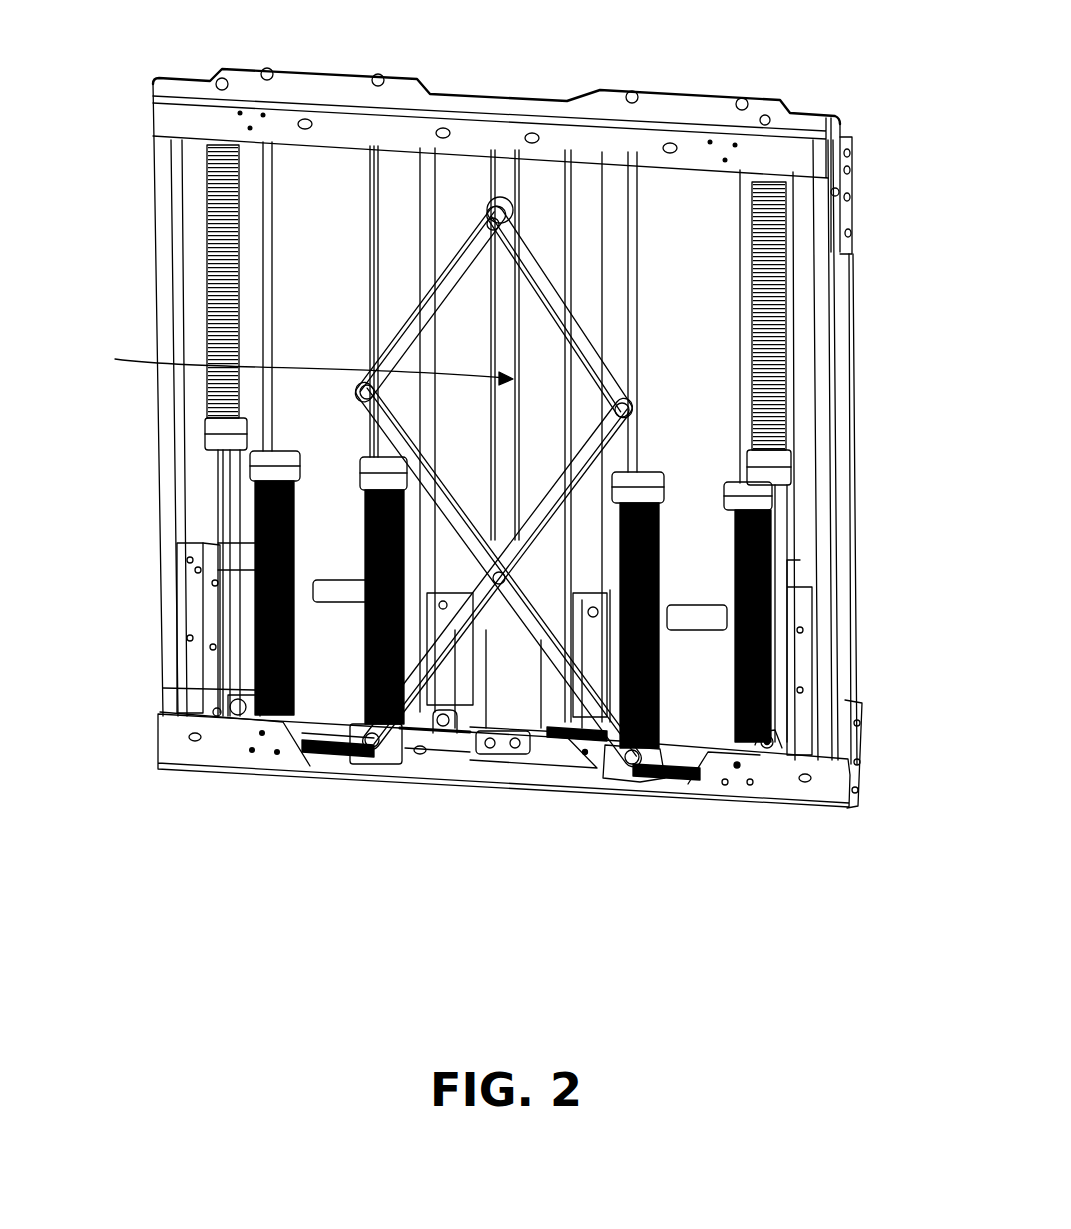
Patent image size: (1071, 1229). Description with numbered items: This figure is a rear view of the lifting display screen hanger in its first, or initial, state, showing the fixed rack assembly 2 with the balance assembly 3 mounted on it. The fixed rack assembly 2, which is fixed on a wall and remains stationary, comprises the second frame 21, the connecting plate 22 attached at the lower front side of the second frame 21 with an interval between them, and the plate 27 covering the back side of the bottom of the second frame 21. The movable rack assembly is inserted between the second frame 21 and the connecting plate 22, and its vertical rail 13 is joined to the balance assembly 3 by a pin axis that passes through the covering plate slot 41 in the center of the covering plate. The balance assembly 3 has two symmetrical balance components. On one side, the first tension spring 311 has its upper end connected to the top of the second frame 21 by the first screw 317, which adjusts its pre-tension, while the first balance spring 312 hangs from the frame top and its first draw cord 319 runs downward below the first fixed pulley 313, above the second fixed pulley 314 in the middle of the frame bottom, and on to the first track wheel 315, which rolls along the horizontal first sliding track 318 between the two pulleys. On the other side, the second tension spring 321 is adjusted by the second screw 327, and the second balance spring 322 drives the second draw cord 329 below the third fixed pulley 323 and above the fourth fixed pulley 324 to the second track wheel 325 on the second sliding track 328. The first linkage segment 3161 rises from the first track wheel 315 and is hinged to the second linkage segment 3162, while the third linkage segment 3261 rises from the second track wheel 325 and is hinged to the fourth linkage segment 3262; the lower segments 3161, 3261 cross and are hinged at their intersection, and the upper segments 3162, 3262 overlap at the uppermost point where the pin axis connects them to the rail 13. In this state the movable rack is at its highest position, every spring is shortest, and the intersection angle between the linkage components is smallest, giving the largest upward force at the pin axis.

The fixed rack assembly 2 is at (500, 140).
The balance assembly 3 is at (586, 705).
The rail 13 is at (512, 705).
The second frame 21 is at (168, 509).
The connecting plate 22 is at (777, 711).
The plate 27 is at (452, 757).
The covering plate slot 41 is at (298, 363).
The first tension spring 311 is at (640, 775).
The first balance spring 312 is at (752, 316).
The first fixed pulley 313 is at (795, 787).
The second fixed pulley 314 is at (520, 762).
The first track wheel 315 is at (665, 777).
The first screw 317 is at (750, 423).
The first sliding track 318 is at (660, 770).
The first draw cord 319 is at (787, 655).
The second tension spring 321 is at (240, 735).
The second balance spring 322 is at (213, 316).
The third fixed pulley 323 is at (200, 688).
The fourth fixed pulley 324 is at (482, 762).
The second track wheel 325 is at (405, 760).
The second screw 327 is at (378, 205).
The second sliding track 328 is at (297, 773).
The second draw cord 329 is at (193, 590).
The first linkage segment 3161 is at (600, 760).
The second linkage segment 3162 is at (440, 268).
The third linkage segment 3261 is at (445, 765).
The fourth linkage segment 3262 is at (585, 347).